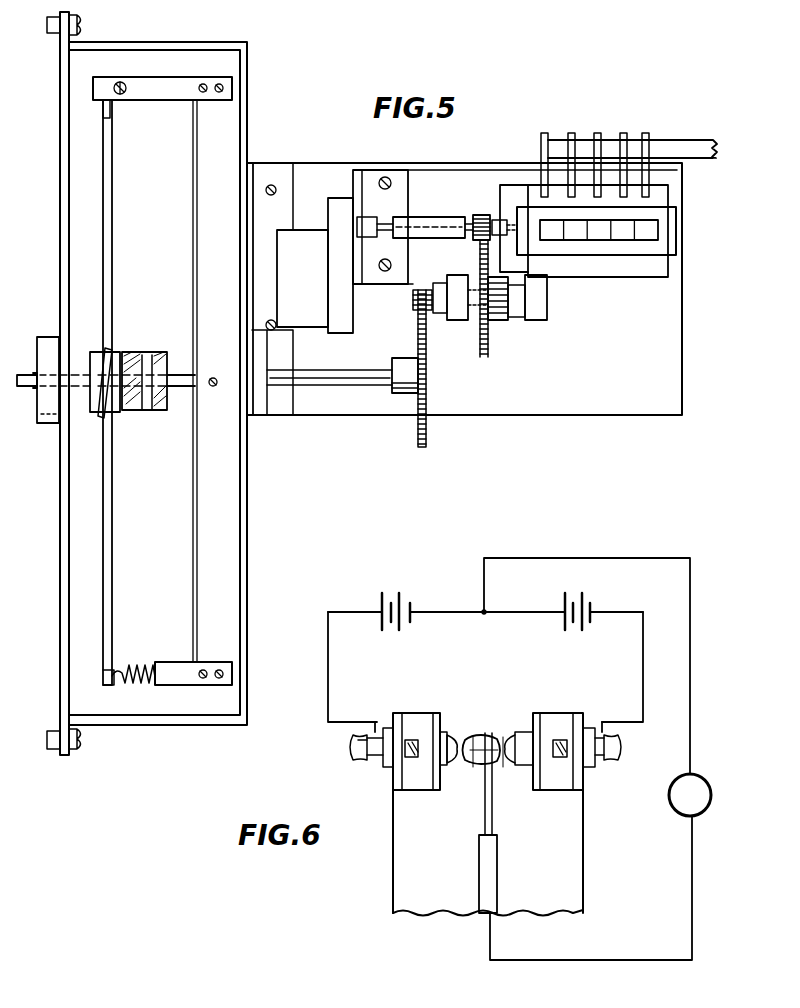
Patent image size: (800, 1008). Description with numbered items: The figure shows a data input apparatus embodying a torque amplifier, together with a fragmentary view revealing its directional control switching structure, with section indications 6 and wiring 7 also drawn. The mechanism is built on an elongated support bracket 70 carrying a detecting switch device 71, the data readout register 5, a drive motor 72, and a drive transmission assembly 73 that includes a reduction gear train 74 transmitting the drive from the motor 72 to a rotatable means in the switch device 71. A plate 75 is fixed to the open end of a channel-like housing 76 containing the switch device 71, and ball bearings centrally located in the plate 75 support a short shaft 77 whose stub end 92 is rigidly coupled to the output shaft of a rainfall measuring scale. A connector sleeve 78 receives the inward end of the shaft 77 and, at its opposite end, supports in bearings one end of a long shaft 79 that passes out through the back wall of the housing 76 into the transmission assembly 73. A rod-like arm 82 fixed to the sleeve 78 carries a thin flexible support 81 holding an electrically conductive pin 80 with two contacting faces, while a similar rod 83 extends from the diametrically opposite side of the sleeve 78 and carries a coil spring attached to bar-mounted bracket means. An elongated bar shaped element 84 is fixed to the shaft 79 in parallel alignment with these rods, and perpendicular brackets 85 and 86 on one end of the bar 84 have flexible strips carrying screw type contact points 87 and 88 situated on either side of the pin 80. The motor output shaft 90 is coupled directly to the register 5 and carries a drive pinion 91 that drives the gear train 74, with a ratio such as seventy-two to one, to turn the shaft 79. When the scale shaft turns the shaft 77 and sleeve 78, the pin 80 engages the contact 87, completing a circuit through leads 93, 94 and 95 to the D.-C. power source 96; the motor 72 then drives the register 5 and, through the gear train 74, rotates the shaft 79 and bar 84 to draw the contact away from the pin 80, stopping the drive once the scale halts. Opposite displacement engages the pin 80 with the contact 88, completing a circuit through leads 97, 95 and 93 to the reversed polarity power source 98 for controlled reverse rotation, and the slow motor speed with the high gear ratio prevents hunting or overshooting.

In FIG. 5, the data readout register 5 is at (612, 268).
In FIG. 5, the section line 6 is at (97, 66).
In FIG. 5, the cable 7 is at (698, 142).
In FIG. 5, the support bracket 70 is at (349, 405).
In FIG. 5, the detecting switch device 71 is at (131, 70).
In FIG. 5, the drive motor 72 is at (345, 251).
In FIG. 6, the drive motor 72 is at (705, 780).
In FIG. 5, the drive transmission assembly 73 is at (524, 402).
In FIG. 5, the reduction gear train 74 is at (470, 253).
In FIG. 5, the plate 75 is at (60, 207).
In FIG. 5, the channel-like housing 76 is at (247, 125).
In FIG. 5, the short shaft 77 is at (77, 375).
In FIG. 5, the connector sleeve 78 is at (148, 352).
In FIG. 5, the long shaft 79 is at (183, 392).
In FIG. 6, the electrically conductive pin 80 is at (485, 733).
In FIG. 5, the thin flexible support 81 is at (110, 110).
In FIG. 6, the thin flexible support 81 is at (485, 820).
In FIG. 5, the rod-like arm 82 is at (112, 213).
In FIG. 6, the rod-like arm 82 is at (479, 877).
In FIG. 5, the radially extending rod 83 is at (112, 517).
In FIG. 5, the bar shaped element 84 is at (203, 478).
In FIG. 6, the bar shaped element 84 is at (393, 877).
In FIG. 6, the bracket 85 is at (385, 705).
In FIG. 5, the bracket 86 is at (169, 84).
In FIG. 6, the bracket 86 is at (594, 706).
In FIG. 6, the screw type contact point 87 is at (563, 757).
In FIG. 6, the screw type contact point 88 is at (412, 757).
In FIG. 5, the output shaft 90 is at (428, 217).
In FIG. 5, the drive pinion 91 is at (486, 215).
In FIG. 5, the stub end 92 is at (30, 374).
In FIG. 6, the lead 93 is at (690, 645).
In FIG. 6, the lead 94 is at (643, 675).
In FIG. 6, the lead 95 is at (600, 960).
In FIG. 6, the D.-C. power source 96 is at (573, 632).
In FIG. 6, the lead 97 is at (328, 658).
In FIG. 6, the reversed polarity power source 98 is at (392, 593).